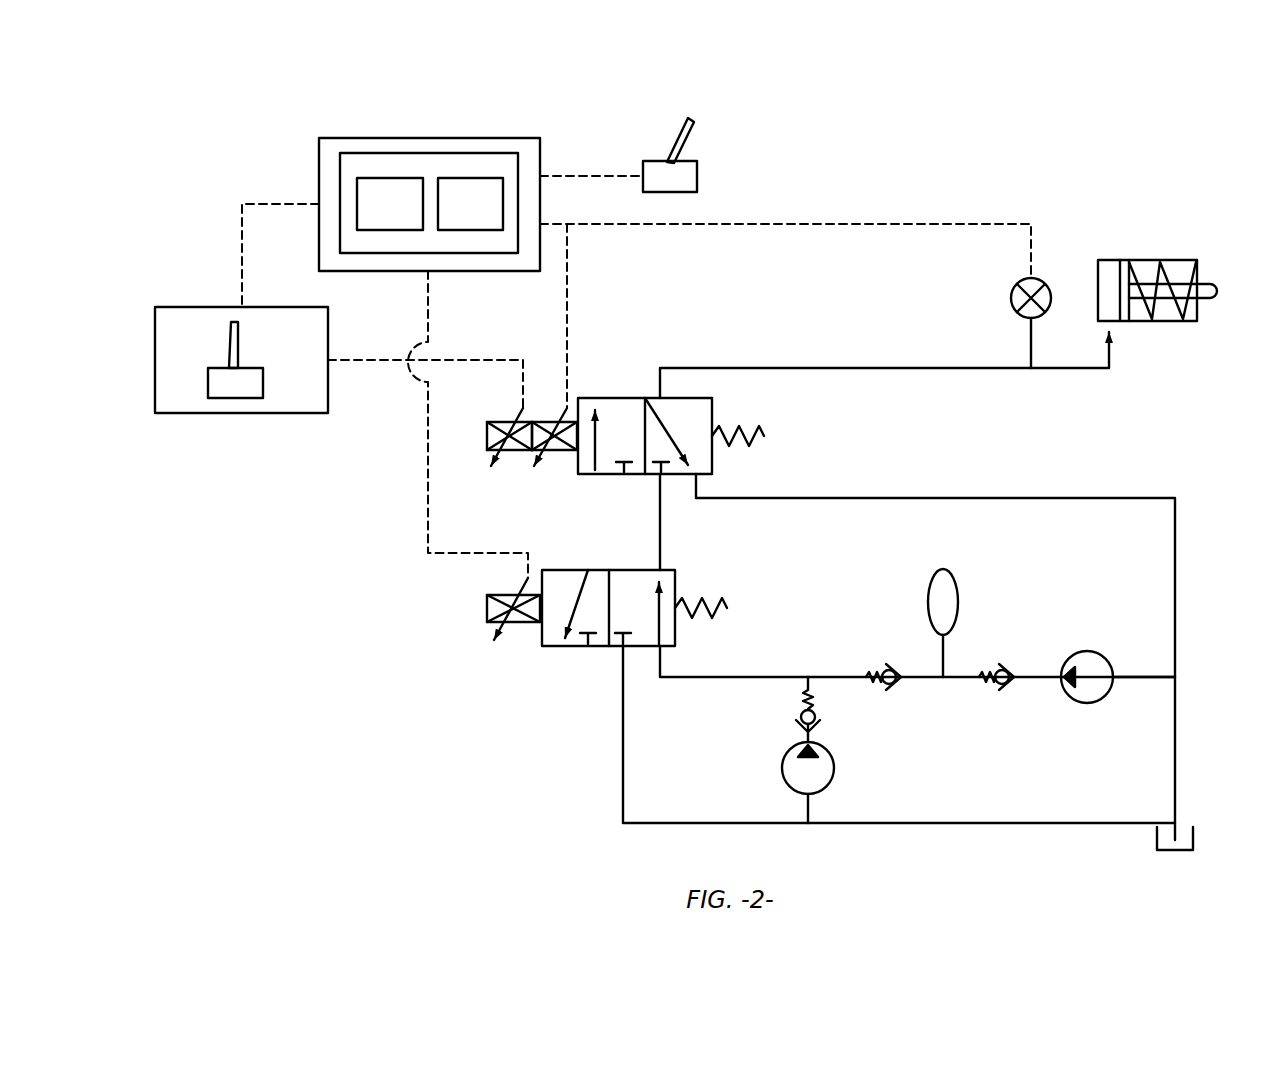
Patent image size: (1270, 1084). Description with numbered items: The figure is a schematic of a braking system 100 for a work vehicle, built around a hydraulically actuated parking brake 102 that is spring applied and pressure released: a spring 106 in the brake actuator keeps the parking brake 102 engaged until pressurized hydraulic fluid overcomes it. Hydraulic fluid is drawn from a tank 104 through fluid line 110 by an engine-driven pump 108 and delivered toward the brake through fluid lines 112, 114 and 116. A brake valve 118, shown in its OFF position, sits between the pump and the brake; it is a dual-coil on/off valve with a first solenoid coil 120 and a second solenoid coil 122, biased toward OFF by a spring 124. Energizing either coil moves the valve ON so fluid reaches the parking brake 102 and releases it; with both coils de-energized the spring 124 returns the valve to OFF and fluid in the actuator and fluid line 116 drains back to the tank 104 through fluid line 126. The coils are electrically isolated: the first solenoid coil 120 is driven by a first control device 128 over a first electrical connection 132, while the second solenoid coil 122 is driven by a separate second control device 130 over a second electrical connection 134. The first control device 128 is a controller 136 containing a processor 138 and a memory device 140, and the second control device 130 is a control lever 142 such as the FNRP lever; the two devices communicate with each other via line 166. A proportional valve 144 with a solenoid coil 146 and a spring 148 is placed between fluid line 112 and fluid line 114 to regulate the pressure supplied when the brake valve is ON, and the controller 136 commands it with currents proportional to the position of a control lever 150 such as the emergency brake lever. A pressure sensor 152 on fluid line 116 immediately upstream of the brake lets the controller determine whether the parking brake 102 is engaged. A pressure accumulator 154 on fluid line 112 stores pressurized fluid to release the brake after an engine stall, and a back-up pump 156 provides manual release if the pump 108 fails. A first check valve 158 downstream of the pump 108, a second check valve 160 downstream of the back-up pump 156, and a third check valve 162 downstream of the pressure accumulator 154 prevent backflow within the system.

The braking system 100 is at (1134, 168).
The parking brake 102 is at (1174, 246).
The tank 104 is at (1193, 838).
The spring 106 is at (1150, 308).
The pump 108 is at (1102, 655).
The fluid line 110 is at (1172, 712).
The fluid line 112 is at (730, 677).
The fluid line 114 is at (659, 512).
The fluid line 116 is at (815, 368).
The brake valve 118 is at (629, 386).
The first solenoid coil 120 is at (552, 453).
The second solenoid coil 122 is at (507, 453).
The spring 124 is at (735, 420).
The fluid line 126 is at (1008, 496).
The first control device 128 is at (315, 158).
The second control device 130 is at (213, 304).
The first electrical connection 132 is at (567, 302).
The second electrical connection 134 is at (456, 360).
The controller 136 is at (430, 153).
The processor 138 is at (371, 219).
The memory device 140 is at (451, 219).
The control lever 142 is at (263, 383).
The proportional valve 144 is at (592, 656).
The solenoid coil 146 is at (517, 640).
The spring 148 is at (700, 600).
The control lever 150 is at (697, 176).
The pressure sensor 152 is at (1011, 298).
The pressure accumulator 154 is at (957, 592).
The back-up pump 156 is at (782, 775).
The first check valve 158 is at (997, 685).
The second check valve 160 is at (797, 717).
The third check valve 162 is at (882, 665).
The line 166 is at (238, 230).